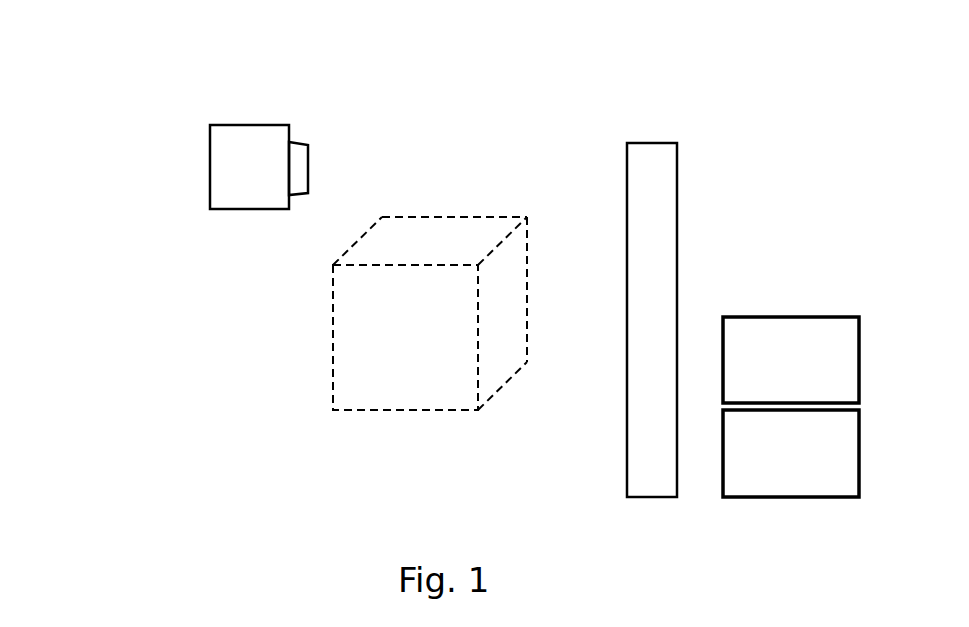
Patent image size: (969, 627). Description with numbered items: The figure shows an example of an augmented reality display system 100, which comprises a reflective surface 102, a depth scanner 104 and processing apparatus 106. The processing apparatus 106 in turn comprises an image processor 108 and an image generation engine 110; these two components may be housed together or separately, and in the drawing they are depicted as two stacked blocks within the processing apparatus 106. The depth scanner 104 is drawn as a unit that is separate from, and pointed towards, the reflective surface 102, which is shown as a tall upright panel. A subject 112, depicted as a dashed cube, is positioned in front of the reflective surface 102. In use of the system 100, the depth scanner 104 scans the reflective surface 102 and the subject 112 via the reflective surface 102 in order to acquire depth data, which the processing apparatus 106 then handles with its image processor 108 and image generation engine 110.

The augmented reality display system 100 is at (140, 95).
The reflective surface 102 is at (627, 175).
The depth scanner 104 is at (210, 183).
The processing apparatus 106 is at (802, 359).
The image processor 108 is at (811, 373).
The image generation engine 110 is at (811, 466).
The subject 112 is at (392, 413).